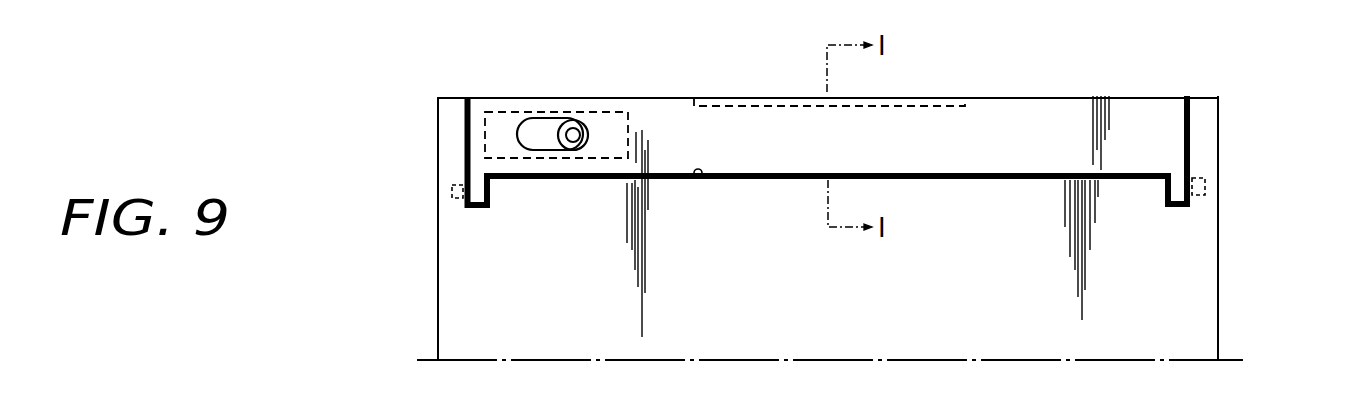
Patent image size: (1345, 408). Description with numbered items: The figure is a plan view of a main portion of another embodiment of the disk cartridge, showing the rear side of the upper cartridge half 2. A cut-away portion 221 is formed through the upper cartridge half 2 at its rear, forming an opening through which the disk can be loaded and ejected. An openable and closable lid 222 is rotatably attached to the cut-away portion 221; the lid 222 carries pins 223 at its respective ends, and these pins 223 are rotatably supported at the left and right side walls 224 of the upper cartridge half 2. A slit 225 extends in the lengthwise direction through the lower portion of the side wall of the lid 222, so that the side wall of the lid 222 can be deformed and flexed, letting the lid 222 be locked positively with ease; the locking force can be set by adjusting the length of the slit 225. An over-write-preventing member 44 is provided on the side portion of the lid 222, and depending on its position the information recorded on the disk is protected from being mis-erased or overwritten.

The upper cartridge half 2 is at (1218, 300).
The over-write-preventing member 44 is at (543, 133).
The cut-away portion 221 is at (697, 178).
The lid 222 is at (1052, 110).
The pins 223 is at (452, 189).
The side walls 224 is at (447, 120).
The slit 225 is at (703, 92).